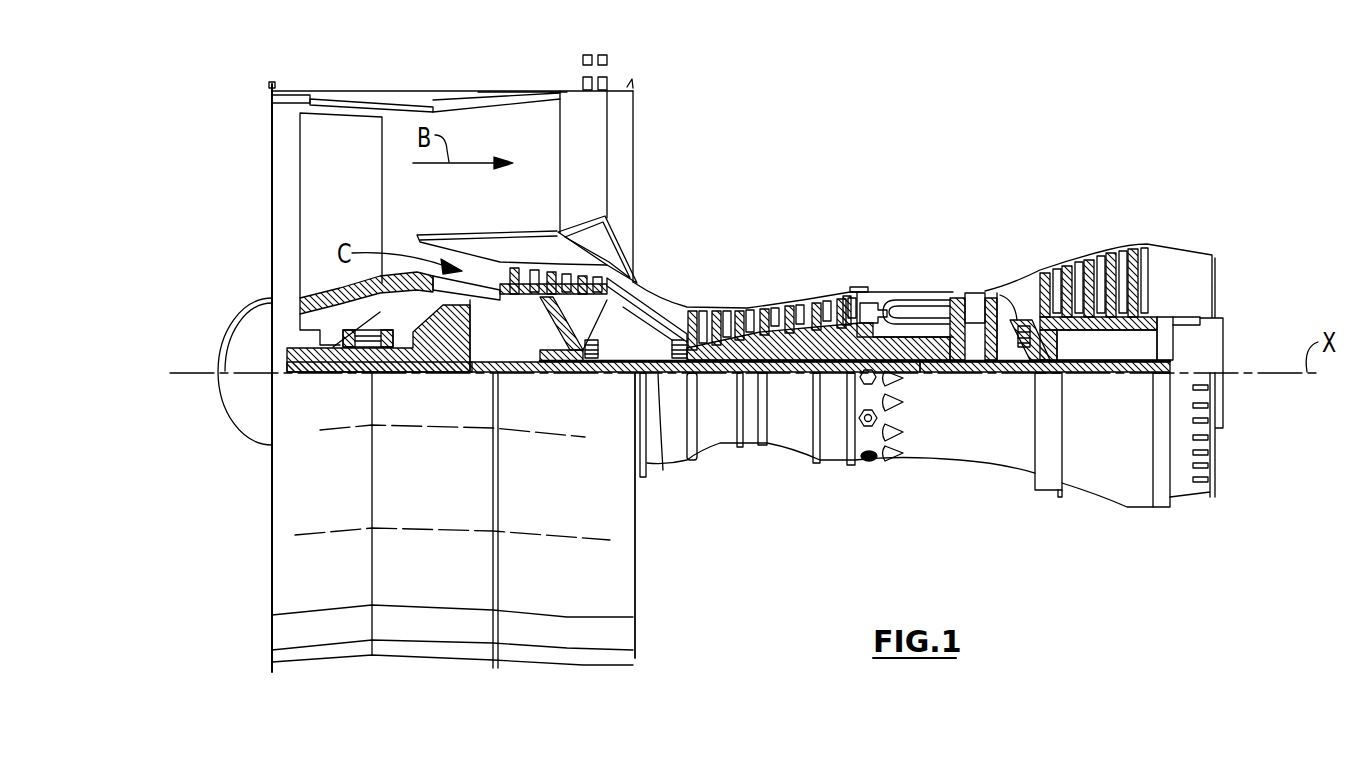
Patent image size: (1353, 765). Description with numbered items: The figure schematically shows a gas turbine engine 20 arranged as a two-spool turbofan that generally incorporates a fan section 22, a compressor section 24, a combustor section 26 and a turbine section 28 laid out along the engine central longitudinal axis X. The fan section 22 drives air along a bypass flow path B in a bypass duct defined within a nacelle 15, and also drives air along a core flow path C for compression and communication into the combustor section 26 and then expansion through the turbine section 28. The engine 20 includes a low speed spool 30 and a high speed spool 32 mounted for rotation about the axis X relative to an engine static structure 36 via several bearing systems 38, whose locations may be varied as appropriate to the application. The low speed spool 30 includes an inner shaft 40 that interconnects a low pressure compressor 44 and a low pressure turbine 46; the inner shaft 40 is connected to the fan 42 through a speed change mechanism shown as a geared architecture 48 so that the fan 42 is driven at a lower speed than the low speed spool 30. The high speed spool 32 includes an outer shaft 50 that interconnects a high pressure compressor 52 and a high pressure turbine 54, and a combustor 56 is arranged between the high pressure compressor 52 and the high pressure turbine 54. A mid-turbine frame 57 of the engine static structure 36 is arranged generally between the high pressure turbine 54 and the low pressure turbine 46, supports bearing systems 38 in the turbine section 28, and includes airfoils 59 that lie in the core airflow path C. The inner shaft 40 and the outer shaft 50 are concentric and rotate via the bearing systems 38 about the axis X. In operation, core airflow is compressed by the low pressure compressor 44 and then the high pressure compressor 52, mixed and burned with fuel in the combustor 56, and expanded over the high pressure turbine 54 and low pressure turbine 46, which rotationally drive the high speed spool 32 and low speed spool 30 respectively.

The nacelle 15 is at (478, 92).
The gas turbine engine 20 is at (924, 131).
The fan section 22 is at (482, 63).
The compressor section 24 is at (492, 210).
The combustor section 26 is at (945, 210).
The turbine section 28 is at (1167, 212).
The low speed spool 30 is at (793, 387).
The high speed spool 32 is at (842, 322).
The engine static structure 36 is at (833, 472).
The bearing systems 38 is at (347, 362).
The inner shaft 40 is at (653, 374).
The fan 42 is at (355, 219).
The low pressure compressor 44 is at (570, 272).
The low pressure turbine 46 is at (1102, 257).
The geared architecture 48 is at (462, 355).
The outer shaft 50 is at (918, 374).
The high pressure compressor 52 is at (767, 343).
The high pressure turbine 54 is at (973, 292).
The combustor 56 is at (908, 314).
The mid-turbine frame 57 is at (1020, 268).
The airfoils 59 is at (1050, 362).